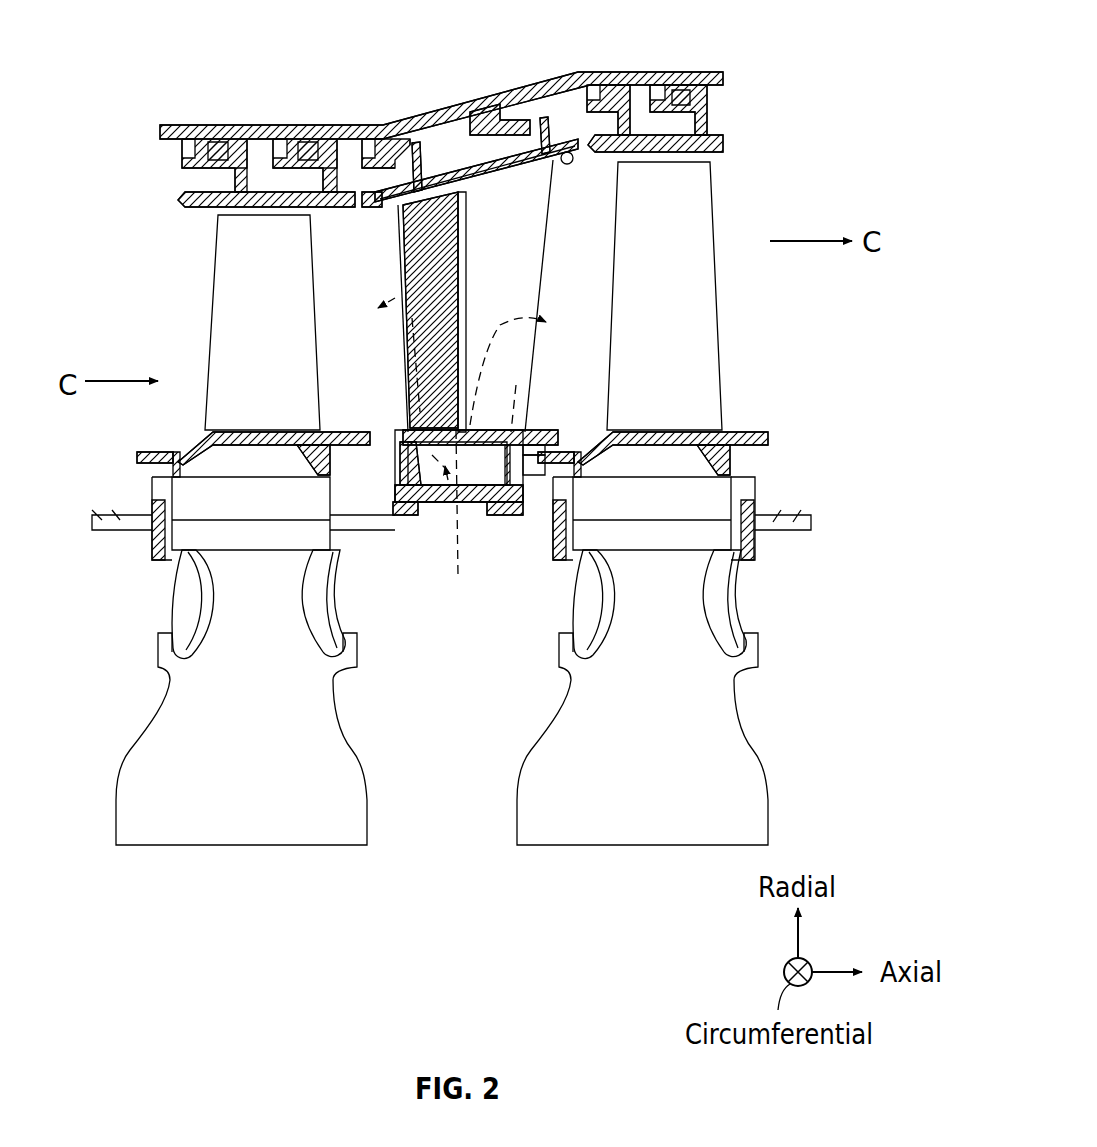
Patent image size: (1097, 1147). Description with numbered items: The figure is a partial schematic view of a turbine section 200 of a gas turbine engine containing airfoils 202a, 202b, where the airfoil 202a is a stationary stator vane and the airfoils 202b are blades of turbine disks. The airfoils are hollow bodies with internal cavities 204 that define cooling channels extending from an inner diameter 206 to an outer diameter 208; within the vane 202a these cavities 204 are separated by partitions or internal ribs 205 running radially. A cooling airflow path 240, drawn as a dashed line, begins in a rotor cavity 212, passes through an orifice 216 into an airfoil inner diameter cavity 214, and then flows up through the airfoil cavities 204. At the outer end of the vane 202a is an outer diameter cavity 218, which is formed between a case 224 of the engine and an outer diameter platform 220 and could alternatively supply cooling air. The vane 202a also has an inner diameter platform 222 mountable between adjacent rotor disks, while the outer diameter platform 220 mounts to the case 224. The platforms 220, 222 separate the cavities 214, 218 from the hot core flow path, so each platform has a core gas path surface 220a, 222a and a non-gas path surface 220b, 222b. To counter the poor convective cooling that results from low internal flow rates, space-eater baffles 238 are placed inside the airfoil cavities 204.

The turbine section 200 is at (165, 50).
The airfoil (stationary stator vane) 202a is at (540, 293).
The airfoil (blade) 202b is at (212, 343).
The internal cavities 204 is at (405, 328).
The partitions or internal ribs 205 is at (468, 228).
The inner diameter 206 is at (393, 425).
The outer diameter 208 is at (205, 222).
The rotor cavity 212 is at (477, 724).
The airfoil inner diameter cavity 214 is at (723, 148).
The orifice 216 is at (708, 113).
The outer diameter cavity 218 is at (183, 155).
The outer diameter platform 220 is at (473, 160).
The core gas path surface 220a is at (565, 150).
The non-gas path surface 220b is at (438, 158).
The inner diameter platform 222 is at (577, 437).
The core gas path surface 222a is at (530, 438).
The non-gas path surface 222b is at (497, 520).
The case 224 is at (465, 165).
The baffles 238 is at (420, 243).
The airflow path 240 is at (528, 350).